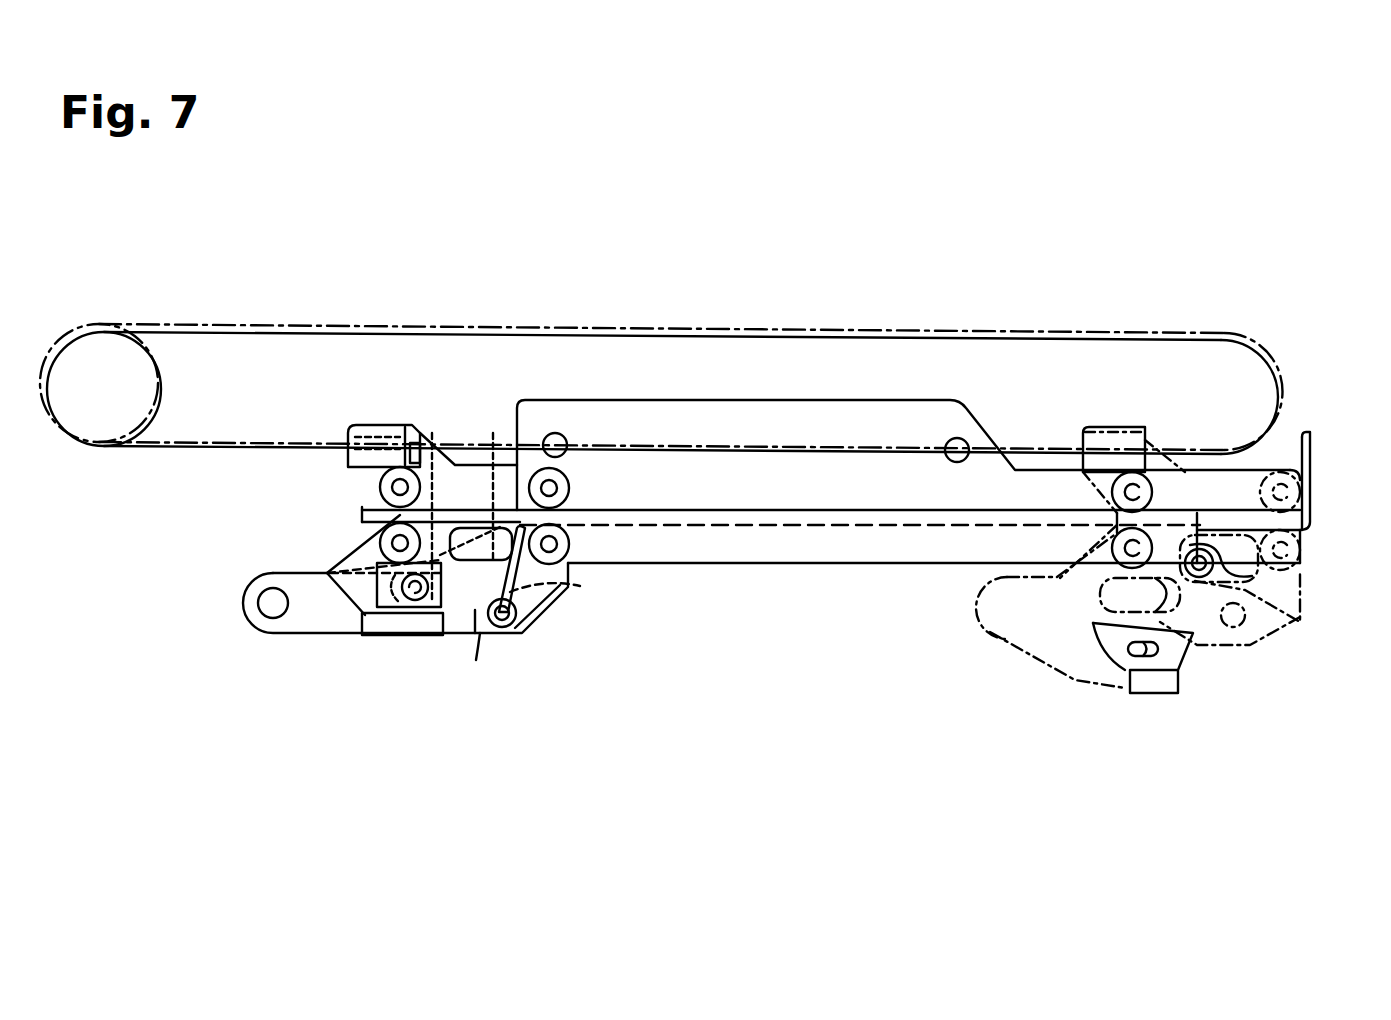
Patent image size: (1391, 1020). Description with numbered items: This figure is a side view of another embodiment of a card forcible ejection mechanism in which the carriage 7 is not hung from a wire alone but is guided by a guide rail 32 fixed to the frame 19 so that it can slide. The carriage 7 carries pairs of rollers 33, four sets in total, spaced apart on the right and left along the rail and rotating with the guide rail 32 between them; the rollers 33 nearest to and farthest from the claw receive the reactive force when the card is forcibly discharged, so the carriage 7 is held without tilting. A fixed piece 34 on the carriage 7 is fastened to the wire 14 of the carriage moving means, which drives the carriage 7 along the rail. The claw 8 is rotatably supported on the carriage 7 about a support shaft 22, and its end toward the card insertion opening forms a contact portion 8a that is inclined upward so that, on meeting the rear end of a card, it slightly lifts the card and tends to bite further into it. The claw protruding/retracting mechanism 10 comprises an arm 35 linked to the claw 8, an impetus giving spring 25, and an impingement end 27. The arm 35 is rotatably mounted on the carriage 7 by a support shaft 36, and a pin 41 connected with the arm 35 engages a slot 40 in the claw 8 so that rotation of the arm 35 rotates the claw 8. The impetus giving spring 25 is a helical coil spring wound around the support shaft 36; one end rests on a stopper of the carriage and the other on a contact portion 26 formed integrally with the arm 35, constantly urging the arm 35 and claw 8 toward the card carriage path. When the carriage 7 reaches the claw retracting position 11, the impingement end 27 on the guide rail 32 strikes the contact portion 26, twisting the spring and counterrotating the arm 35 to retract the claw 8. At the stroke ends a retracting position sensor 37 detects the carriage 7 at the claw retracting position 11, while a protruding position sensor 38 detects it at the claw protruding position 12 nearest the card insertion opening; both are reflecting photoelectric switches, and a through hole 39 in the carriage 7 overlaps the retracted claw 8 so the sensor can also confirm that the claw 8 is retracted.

The carriage 7 is at (473, 470).
The claw 8 is at (334, 622).
The contact portion 8a is at (1190, 682).
The claw protruding/retracting mechanism 10 is at (232, 624).
The claw retracting position 11 is at (308, 712).
The claw protruding position 12 is at (1103, 712).
The wire 14 is at (186, 452).
The frame 19 is at (812, 408).
The support shaft 22 is at (272, 618).
The impetus giving spring 25 is at (560, 600).
The contact portion 26 is at (500, 560).
The impingement end 27 is at (483, 620).
The guide rail 32 is at (365, 513).
The rollers 33 is at (560, 538).
The fixed piece 34 is at (378, 432).
The arm 35 is at (580, 586).
The support shaft 36 is at (505, 628).
The retracting position sensor 37 is at (392, 636).
The protruding position sensor 38 is at (1125, 440).
The through hole 39 is at (362, 612).
The slot 40 is at (432, 540).
The pin 41 is at (418, 620).